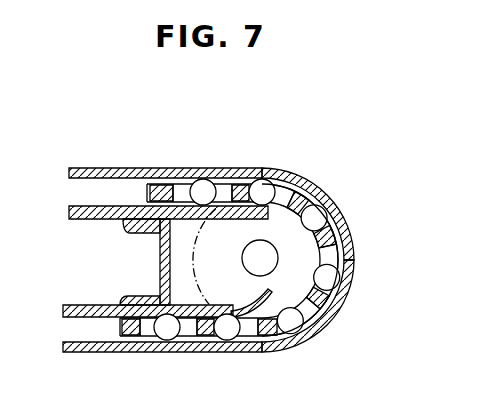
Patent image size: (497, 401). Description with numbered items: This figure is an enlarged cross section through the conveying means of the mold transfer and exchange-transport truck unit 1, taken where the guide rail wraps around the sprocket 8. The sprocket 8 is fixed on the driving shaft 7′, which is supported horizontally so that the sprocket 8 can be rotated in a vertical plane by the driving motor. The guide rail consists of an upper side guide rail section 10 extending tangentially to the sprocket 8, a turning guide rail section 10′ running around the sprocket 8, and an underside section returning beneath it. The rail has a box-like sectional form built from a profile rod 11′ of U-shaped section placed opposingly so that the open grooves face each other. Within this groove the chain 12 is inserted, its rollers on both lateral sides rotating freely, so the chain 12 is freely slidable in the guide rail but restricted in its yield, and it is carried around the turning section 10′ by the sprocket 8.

The mold transfer and exchange-transport truck unit 1 is at (95, 230).
The driving shaft 7′ is at (273, 251).
The sprocket 8 is at (274, 208).
The upper side guide rail section 10 is at (101, 167).
The turning guide rail section 10′ is at (333, 198).
The profile rod 11′ is at (353, 246).
The chain 12 is at (346, 307).